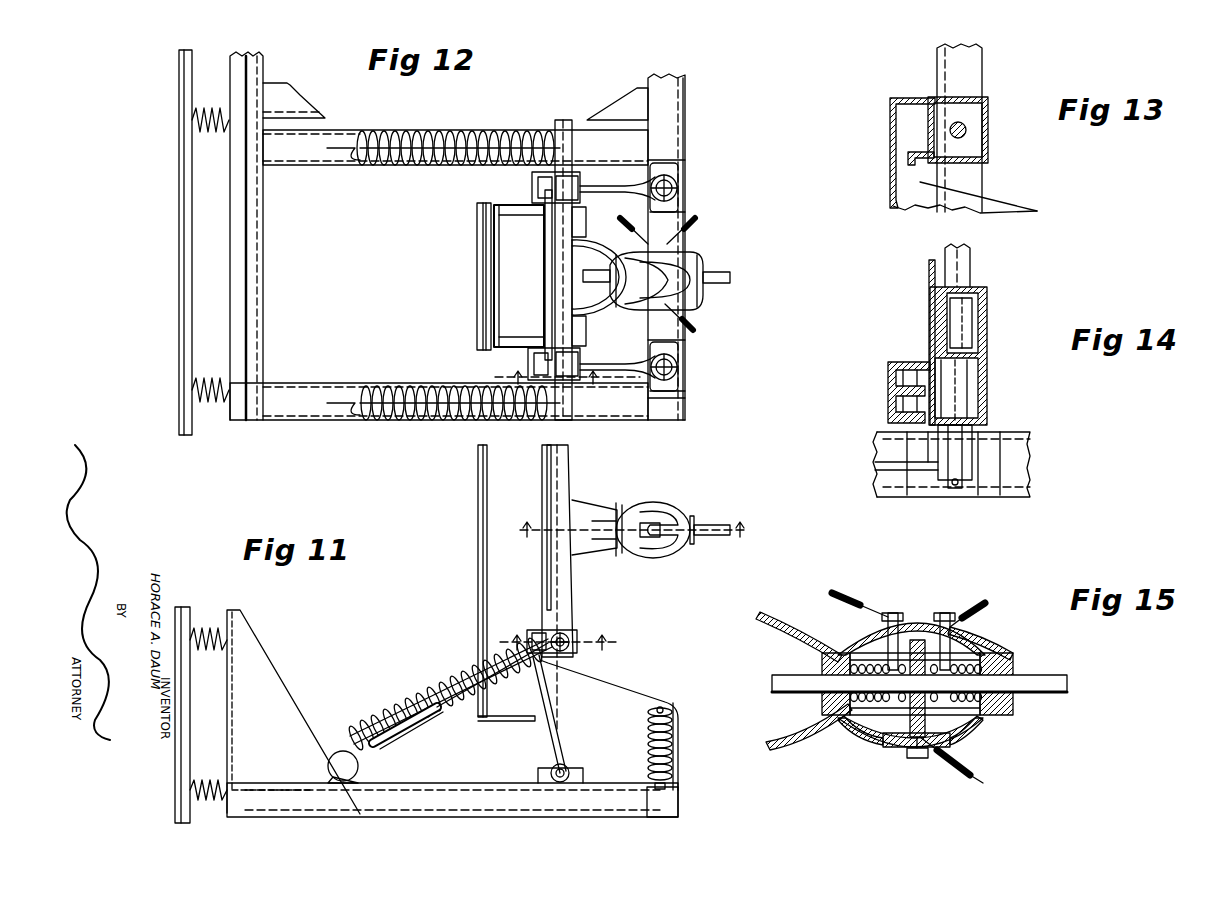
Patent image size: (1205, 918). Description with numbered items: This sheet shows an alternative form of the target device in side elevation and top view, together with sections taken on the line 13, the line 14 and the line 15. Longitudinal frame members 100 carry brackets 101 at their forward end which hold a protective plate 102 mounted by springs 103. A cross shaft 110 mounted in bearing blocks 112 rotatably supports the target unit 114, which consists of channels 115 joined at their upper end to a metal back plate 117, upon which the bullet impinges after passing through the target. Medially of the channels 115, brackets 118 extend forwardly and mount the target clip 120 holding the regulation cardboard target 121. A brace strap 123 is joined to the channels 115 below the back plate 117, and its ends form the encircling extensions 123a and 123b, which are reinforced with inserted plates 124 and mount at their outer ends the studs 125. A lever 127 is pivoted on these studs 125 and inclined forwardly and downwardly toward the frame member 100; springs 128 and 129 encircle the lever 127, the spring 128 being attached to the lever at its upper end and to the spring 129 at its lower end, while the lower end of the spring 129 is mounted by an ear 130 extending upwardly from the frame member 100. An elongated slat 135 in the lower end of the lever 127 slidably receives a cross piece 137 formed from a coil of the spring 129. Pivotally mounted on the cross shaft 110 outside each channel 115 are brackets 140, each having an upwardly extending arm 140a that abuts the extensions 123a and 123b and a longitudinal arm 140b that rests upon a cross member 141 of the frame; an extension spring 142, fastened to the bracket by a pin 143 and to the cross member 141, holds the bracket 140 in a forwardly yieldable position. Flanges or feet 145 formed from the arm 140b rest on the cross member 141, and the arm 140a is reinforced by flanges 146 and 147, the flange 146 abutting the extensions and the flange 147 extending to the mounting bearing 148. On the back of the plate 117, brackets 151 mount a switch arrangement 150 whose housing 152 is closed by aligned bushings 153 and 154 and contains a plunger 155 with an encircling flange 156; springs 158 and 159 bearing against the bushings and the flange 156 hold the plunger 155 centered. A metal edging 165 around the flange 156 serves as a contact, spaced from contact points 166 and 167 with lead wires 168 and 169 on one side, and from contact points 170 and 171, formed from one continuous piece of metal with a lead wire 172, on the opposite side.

In FIG. 12, the longitudinal frame member 100 is at (282, 100).
In FIG. 14, the longitudinal frame member 100 is at (1018, 478).
In FIG. 11, the longitudinal frame member 100 is at (482, 786).
In FIG. 12, the bracket 101 is at (240, 254).
In FIG. 11, the bracket 101 is at (280, 694).
In FIG. 12, the protective plate 102 is at (178, 237).
In FIG. 11, the protective plate 102 is at (183, 725).
In FIG. 12, the spring 103 is at (196, 108).
In FIG. 11, the spring 103 is at (200, 628).
In FIG. 12, the cross shaft 110 is at (548, 262).
In FIG. 11, the cross shaft 110 is at (570, 772).
In FIG. 14, the bearing block 112 is at (990, 490).
In FIG. 11, the bearing block 112 is at (542, 781).
In FIG. 11, the target unit 114 is at (572, 493).
In FIG. 12, the channel 115 is at (557, 242).
In FIG. 13, the channel 115 is at (962, 70).
In FIG. 14, the channel 115 is at (972, 305).
In FIG. 11, the channel 115 is at (565, 603).
In FIG. 12, the metal back plate 117 is at (549, 284).
In FIG. 11, the metal back plate 117 is at (547, 470).
In FIG. 12, the bracket 118 is at (505, 215).
In FIG. 11, the bracket 118 is at (512, 718).
In FIG. 12, the target clip 120 is at (475, 233).
In FIG. 11, the target clip 120 is at (478, 654).
In FIG. 12, the cardboard target 121 is at (475, 216).
In FIG. 11, the cardboard target 121 is at (478, 566).
In FIG. 13, the brace strap 123 is at (912, 155).
In FIG. 14, the brace strap 123 is at (930, 312).
In FIG. 12, the encircling extension 123a is at (556, 188).
In FIG. 11, the encircling extension 123a is at (578, 652).
In FIG. 12, the encircling extension 123b is at (578, 356).
In FIG. 14, the encircling extension 123b is at (987, 388).
In FIG. 13, the inserted plate 124 is at (982, 120).
In FIG. 14, the inserted plate 124 is at (975, 407).
In FIG. 13, the stud 125 is at (952, 124).
In FIG. 14, the stud 125 is at (968, 272).
In FIG. 14, the lever 127 is at (893, 466).
In FIG. 11, the lever 127 is at (438, 695).
In FIG. 12, the spring 128 is at (500, 135).
In FIG. 11, the spring 128 is at (470, 728).
In FIG. 12, the spring 129 is at (410, 120).
In FIG. 11, the spring 129 is at (418, 760).
In FIG. 11, the ear 130 is at (348, 750).
In FIG. 11, the elongated slat 135 is at (412, 708).
In FIG. 11, the cross piece 137 is at (422, 702).
In FIG. 12, the bracket 140 is at (632, 162).
In FIG. 13, the bracket 140 is at (965, 193).
In FIG. 11, the bracket 140 is at (618, 690).
In FIG. 12, the upwardly extending arm 140a is at (535, 180).
In FIG. 13, the upwardly extending arm 140a is at (896, 180).
In FIG. 14, the upwardly extending arm 140a is at (905, 362).
In FIG. 11, the upwardly extending arm 140a is at (535, 630).
In FIG. 12, the longitudinal arm 140b is at (678, 177).
In FIG. 11, the longitudinal arm 140b is at (679, 752).
In FIG. 12, the cross member 141 is at (670, 115).
In FIG. 11, the cross member 141 is at (680, 813).
In FIG. 12, the extension spring 142 is at (678, 190).
In FIG. 11, the extension spring 142 is at (675, 735).
In FIG. 12, the pin 143 is at (680, 205).
In FIG. 11, the pin 143 is at (664, 708).
In FIG. 12, the flange 145 is at (676, 160).
In FIG. 11, the flange 145 is at (668, 784).
In FIG. 13, the flange 146 is at (905, 128).
In FIG. 14, the flange 146 is at (896, 378).
In FIG. 13, the flange 147 is at (893, 198).
In FIG. 14, the flange 147 is at (896, 405).
In FIG. 11, the flange 147 is at (555, 722).
In FIG. 11, the mounting bearing 148 is at (565, 766).
In FIG. 12, the switch arrangement 150 is at (700, 250).
In FIG. 11, the switch arrangement 150 is at (665, 498).
In FIG. 12, the bracket 151 is at (590, 230).
In FIG. 11, the bracket 151 is at (590, 515).
In FIG. 15, the bracket 151 is at (762, 612).
In FIG. 15, the housing 152 is at (970, 628).
In FIG. 15, the bushing 153 is at (822, 668).
In FIG. 15, the bushing 154 is at (1005, 672).
In FIG. 15, the plunger 155 is at (1062, 686).
In FIG. 15, the encircling flange 156 is at (975, 733).
In FIG. 15, the spring 158 is at (855, 640).
In FIG. 15, the spring 159 is at (985, 650).
In FIG. 15, the metal edging 165 is at (916, 640).
In FIG. 15, the electrical contact point 166 is at (893, 613).
In FIG. 15, the electrical contact point 167 is at (944, 613).
In FIG. 15, the lead wire 168 is at (863, 598).
In FIG. 15, the lead wire 169 is at (1000, 598).
In FIG. 15, the electrical contact point 170 is at (868, 748).
In FIG. 15, the electrical contact point 171 is at (968, 738).
In FIG. 15, the lead wire 172 is at (980, 776).
In FIG. 12, the section line 13 is at (563, 374).
In FIG. 11, the section line 14 is at (560, 640).
In FIG. 11, the section line 15 is at (638, 528).